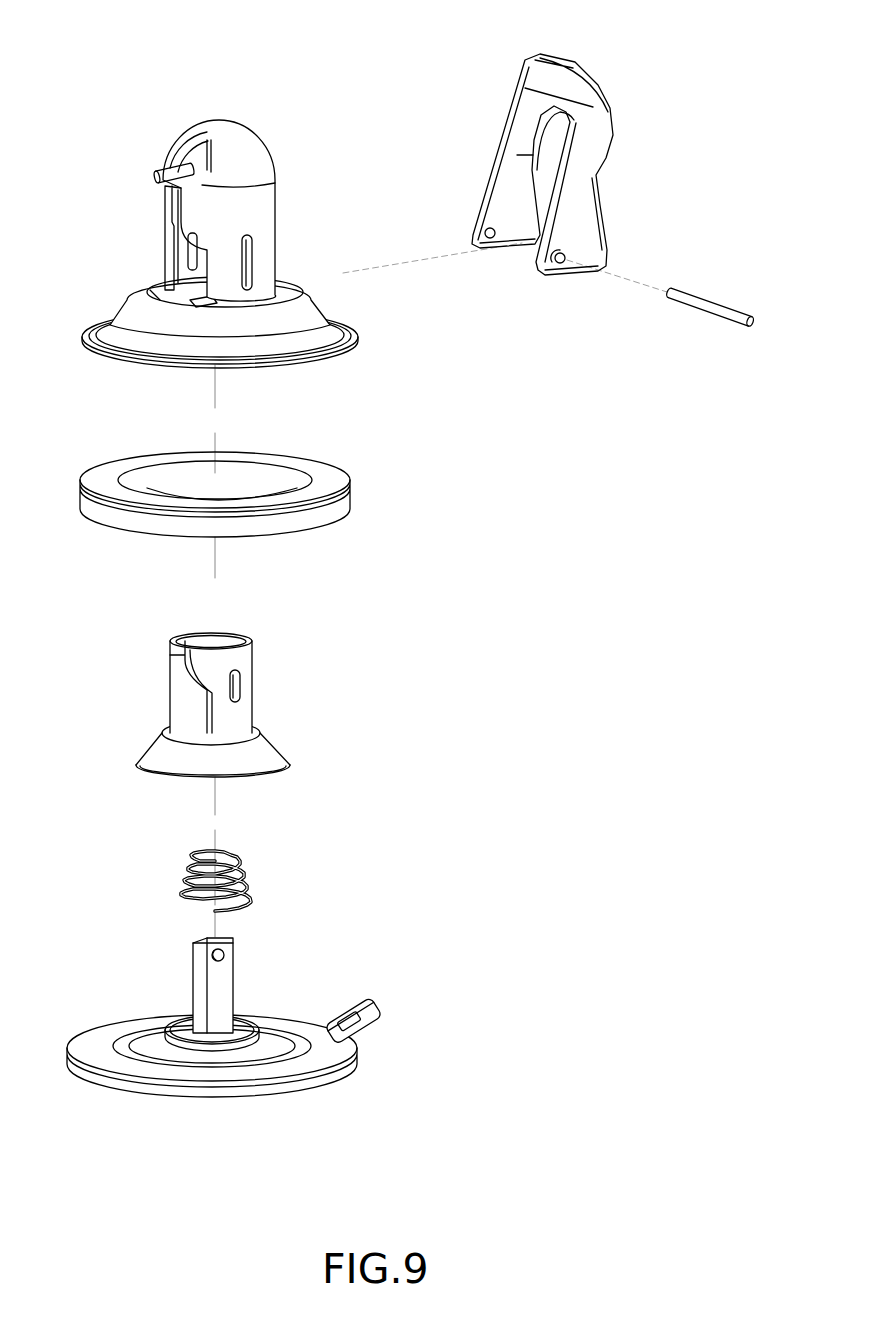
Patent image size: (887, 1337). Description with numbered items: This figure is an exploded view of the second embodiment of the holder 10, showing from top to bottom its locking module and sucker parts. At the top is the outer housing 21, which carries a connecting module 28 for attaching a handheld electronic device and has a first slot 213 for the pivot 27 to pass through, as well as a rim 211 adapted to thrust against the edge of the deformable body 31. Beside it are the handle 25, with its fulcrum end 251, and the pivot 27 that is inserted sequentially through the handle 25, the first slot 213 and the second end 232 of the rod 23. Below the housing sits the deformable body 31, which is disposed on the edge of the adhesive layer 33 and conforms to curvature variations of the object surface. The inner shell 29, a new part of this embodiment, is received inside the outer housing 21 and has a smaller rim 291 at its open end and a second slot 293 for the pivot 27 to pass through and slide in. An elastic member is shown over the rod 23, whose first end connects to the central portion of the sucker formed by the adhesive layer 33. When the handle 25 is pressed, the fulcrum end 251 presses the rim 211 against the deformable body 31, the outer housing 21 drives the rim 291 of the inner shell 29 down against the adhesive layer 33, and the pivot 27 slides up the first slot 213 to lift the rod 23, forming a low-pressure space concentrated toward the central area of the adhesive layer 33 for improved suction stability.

The holder 10 is at (138, 26).
The outer housing 21 is at (218, 176).
The connecting module 28 is at (160, 177).
The first slot 213 is at (254, 263).
The rim 211 is at (83, 338).
The handle 25 is at (588, 164).
The fulcrum end 251 is at (610, 258).
The pivot 27 is at (745, 332).
The deformable body 31 is at (315, 472).
The inner shell 29 is at (233, 704).
The second slot 293 is at (238, 682).
The rim 291 is at (285, 767).
The rod 23 is at (212, 974).
The second end 232 is at (223, 937).
The adhesive layer 33 is at (356, 1072).